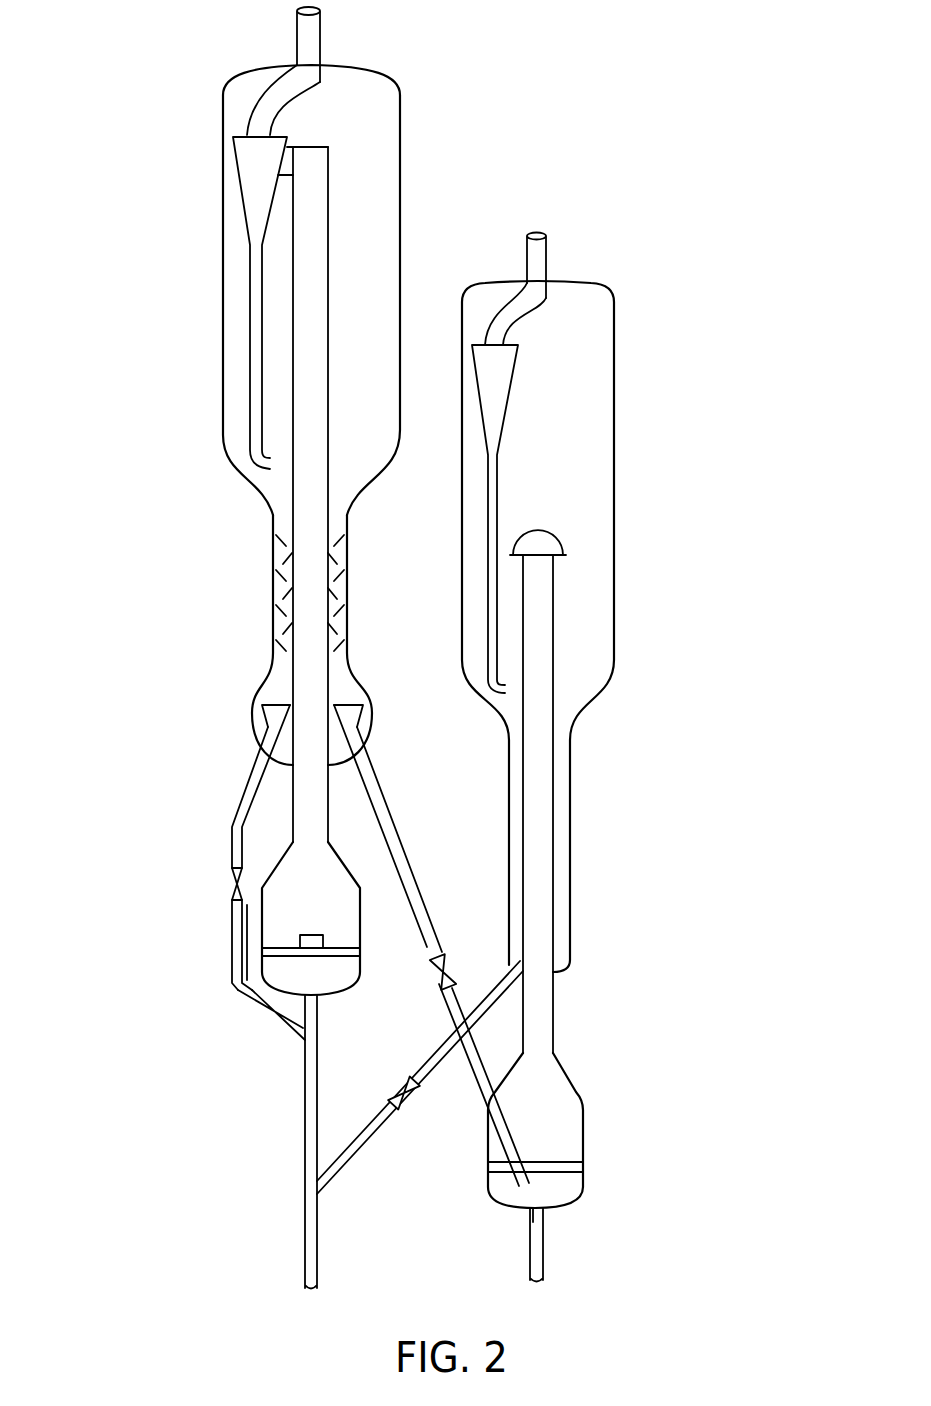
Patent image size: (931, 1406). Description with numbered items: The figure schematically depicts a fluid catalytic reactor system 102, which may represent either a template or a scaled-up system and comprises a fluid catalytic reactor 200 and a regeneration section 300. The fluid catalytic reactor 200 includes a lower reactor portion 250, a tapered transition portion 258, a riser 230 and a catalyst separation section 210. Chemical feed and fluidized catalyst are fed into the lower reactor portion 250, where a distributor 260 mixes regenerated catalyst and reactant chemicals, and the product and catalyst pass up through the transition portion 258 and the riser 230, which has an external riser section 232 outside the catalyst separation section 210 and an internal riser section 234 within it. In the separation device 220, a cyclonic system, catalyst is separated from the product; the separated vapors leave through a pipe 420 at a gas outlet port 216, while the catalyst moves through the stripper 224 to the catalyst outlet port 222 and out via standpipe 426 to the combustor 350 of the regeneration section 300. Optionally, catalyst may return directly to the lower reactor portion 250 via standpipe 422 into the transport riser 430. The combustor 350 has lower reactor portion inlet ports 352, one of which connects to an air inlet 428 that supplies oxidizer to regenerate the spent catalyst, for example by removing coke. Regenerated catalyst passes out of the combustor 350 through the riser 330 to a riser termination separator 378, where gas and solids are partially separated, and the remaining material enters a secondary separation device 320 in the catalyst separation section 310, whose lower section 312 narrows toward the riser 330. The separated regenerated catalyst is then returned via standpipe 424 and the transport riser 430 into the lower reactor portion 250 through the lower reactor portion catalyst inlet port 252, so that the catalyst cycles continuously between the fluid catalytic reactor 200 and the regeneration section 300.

The fluid catalytic reactor system 102 is at (628, 78).
The fluid catalytic reactor 200 is at (139, 236).
The catalyst separation section 210 is at (223, 347).
The gas outlet port 216 is at (307, 63).
The separation device 220 is at (232, 160).
The catalyst outlet port 222 is at (355, 752).
The stripper 224 is at (281, 572).
The riser 230 is at (265, 787).
The external riser section 232 is at (355, 793).
The internal riser section 234 is at (290, 500).
The lower reactor portion 250 is at (258, 903).
The lower reactor portion catalyst inlet port 252 is at (302, 1022).
The transition portion 258 is at (268, 863).
The distributor 260 is at (293, 963).
The regeneration section 300 is at (681, 553).
The catalyst separation section 310 is at (614, 373).
The lower vessel section 312 is at (570, 924).
The secondary separation device 320 is at (484, 433).
The riser 330 is at (553, 1022).
The combustor 350 is at (583, 1122).
The lower reactor portion inlet port 352 is at (533, 1207).
The riser termination separator 378 is at (538, 557).
The pipe 420 is at (322, 38).
The standpipe 422 is at (232, 943).
The standpipe 424 is at (382, 1128).
The standpipe 426 is at (428, 912).
The air inlet 428 is at (543, 1258).
The transport riser 430 is at (320, 1022).